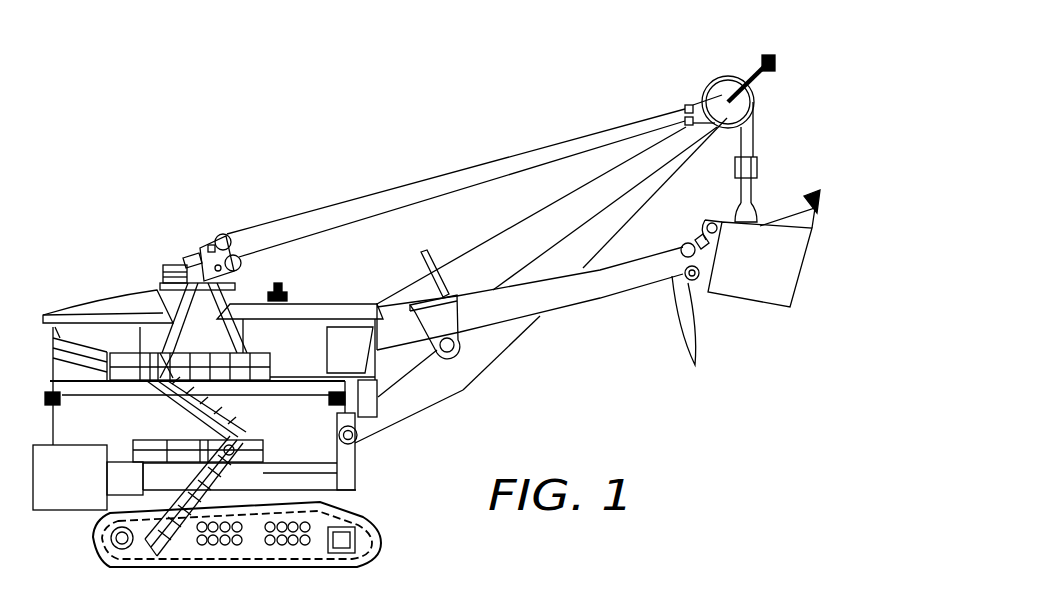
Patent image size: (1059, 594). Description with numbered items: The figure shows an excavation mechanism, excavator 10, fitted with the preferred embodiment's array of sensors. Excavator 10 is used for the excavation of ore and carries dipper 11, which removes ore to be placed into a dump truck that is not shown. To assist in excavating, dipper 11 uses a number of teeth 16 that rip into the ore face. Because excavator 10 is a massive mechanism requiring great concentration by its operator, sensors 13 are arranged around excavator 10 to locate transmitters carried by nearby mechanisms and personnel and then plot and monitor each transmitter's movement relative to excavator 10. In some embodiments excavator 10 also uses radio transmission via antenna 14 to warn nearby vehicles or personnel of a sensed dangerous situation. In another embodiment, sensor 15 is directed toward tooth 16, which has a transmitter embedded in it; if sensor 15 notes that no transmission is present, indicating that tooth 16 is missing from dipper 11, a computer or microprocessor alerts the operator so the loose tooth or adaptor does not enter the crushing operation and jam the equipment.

The excavator 10 is at (88, 490).
The dipper 11 is at (768, 283).
The sensors 13 is at (62, 400).
The antenna 14 is at (287, 298).
The sensor 15 is at (762, 62).
The teeth 16 is at (811, 199).